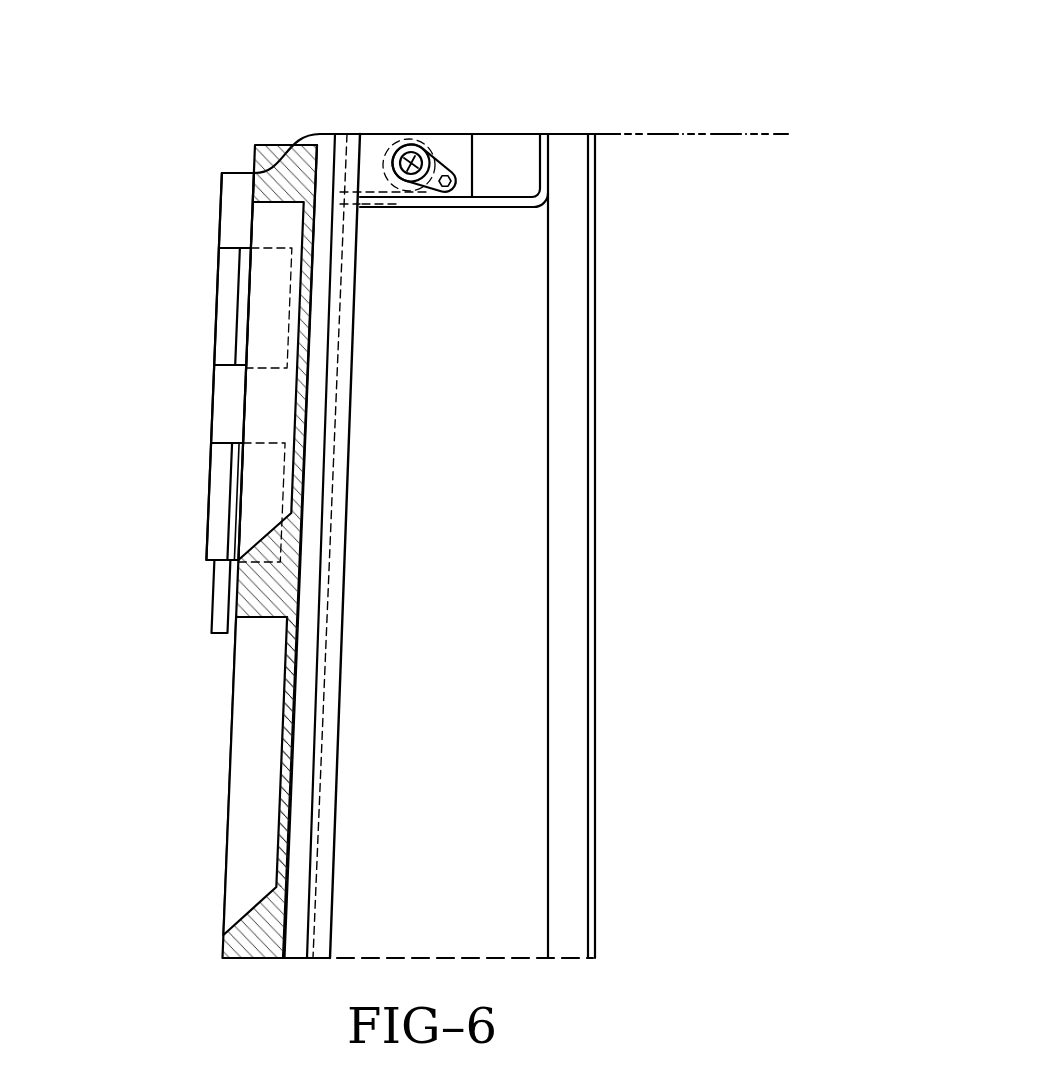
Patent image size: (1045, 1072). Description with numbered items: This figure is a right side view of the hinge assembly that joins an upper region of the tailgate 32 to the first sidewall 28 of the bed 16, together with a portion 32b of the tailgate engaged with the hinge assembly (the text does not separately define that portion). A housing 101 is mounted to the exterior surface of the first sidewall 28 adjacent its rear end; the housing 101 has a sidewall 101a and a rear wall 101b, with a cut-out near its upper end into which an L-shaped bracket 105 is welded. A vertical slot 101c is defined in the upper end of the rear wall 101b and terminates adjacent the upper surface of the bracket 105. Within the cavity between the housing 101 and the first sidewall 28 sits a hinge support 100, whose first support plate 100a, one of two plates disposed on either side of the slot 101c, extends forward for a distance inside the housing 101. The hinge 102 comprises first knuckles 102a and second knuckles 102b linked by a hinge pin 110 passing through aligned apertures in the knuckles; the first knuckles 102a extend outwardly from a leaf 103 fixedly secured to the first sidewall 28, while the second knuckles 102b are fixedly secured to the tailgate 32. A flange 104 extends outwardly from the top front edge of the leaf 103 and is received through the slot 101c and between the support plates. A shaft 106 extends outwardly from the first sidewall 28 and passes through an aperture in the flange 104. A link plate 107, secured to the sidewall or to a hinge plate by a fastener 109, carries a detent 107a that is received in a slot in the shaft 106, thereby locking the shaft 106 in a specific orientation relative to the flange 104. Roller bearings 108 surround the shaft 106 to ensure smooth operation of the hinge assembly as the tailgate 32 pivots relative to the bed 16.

The bed 16 is at (554, 68).
The first sidewall 28 is at (721, 126).
The tailgate 32 is at (221, 829).
The door side wall 32b is at (296, 703).
The hinge support 100 is at (365, 122).
The first support plate 100a is at (464, 163).
The housing 101 is at (518, 355).
The sidewall 101a is at (512, 620).
The rear wall 101b is at (313, 752).
The vertical slot 101c is at (339, 159).
The hinge 102 is at (202, 271).
The first knuckles 102a is at (229, 211).
The second knuckles 102b is at (229, 307).
The leaf 103 is at (321, 309).
The flange 104 is at (435, 138).
The L-shaped bracket 105 is at (503, 208).
The shaft 106 is at (407, 173).
The link plate 107 is at (430, 160).
The detent 107a is at (396, 152).
The roller bearings 108 is at (434, 195).
The fastener 109 is at (448, 188).
The hinge pin 110 is at (222, 592).